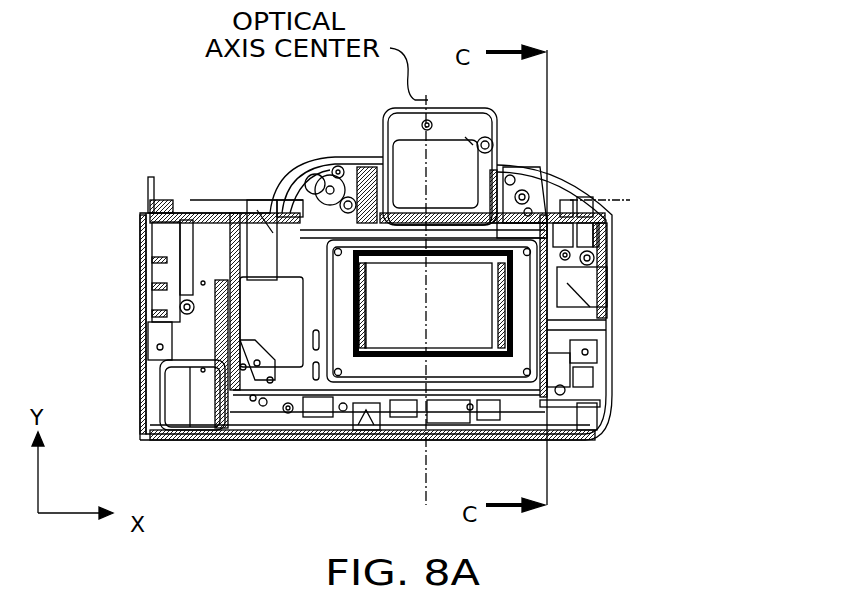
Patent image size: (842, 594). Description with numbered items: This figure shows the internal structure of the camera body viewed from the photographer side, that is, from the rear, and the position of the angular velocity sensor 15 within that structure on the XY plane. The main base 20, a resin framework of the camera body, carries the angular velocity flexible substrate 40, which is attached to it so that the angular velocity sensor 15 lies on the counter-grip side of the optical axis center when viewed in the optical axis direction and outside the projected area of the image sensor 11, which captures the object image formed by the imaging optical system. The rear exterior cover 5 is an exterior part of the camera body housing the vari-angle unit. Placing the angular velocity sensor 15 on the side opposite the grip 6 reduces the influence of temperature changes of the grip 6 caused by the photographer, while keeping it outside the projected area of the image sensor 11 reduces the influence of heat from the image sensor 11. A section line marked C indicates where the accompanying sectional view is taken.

The rear exterior cover 5 is at (372, 165).
The image sensor 11 is at (383, 277).
The grip 6 is at (133, 343).
The main base 20 is at (607, 267).
The angular velocity sensor 15 is at (617, 360).
The angular velocity flexible substrate 40 is at (597, 410).